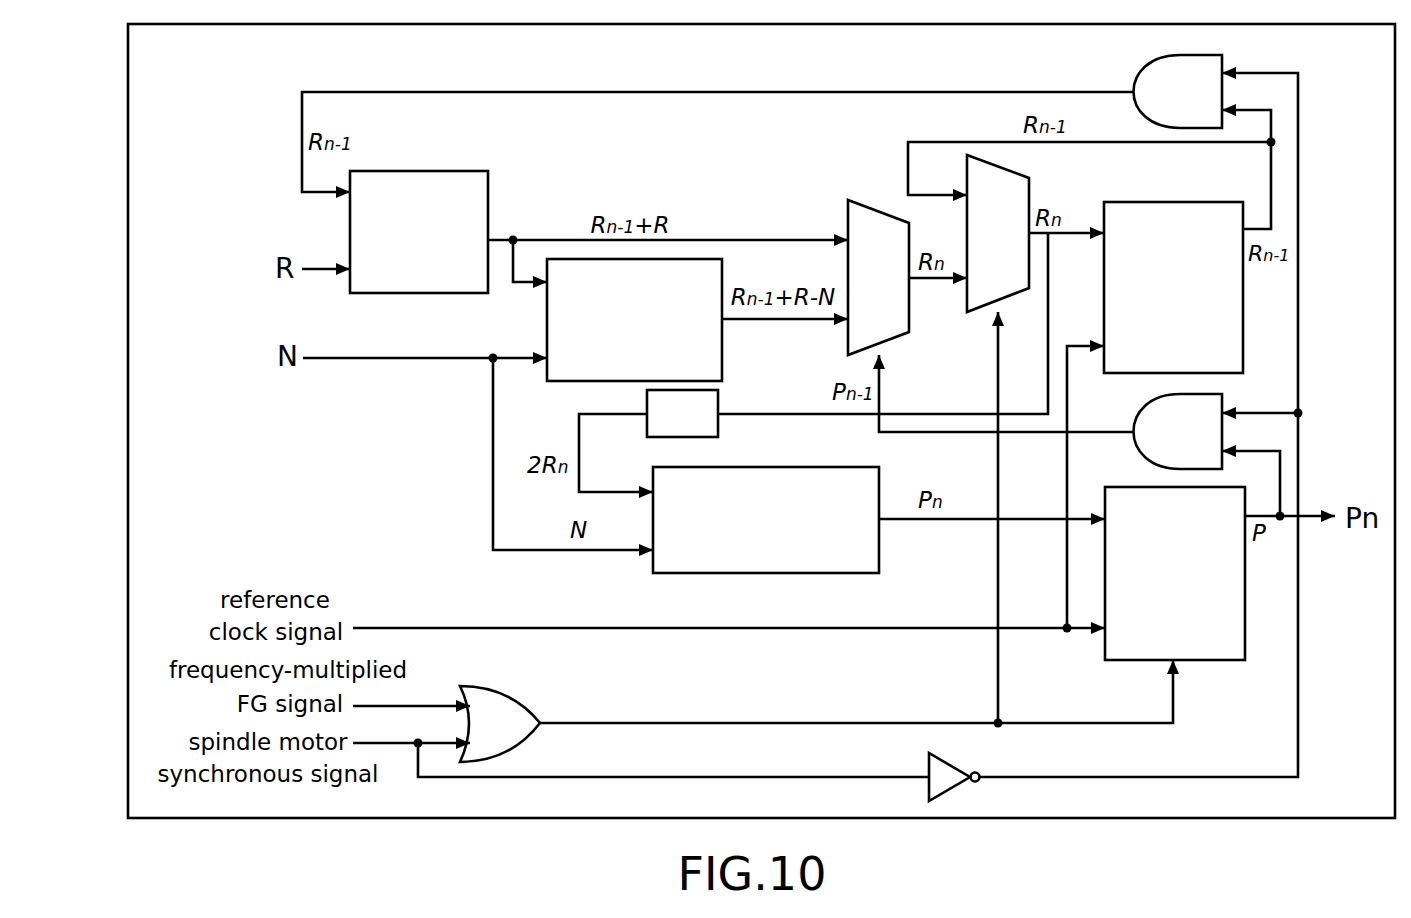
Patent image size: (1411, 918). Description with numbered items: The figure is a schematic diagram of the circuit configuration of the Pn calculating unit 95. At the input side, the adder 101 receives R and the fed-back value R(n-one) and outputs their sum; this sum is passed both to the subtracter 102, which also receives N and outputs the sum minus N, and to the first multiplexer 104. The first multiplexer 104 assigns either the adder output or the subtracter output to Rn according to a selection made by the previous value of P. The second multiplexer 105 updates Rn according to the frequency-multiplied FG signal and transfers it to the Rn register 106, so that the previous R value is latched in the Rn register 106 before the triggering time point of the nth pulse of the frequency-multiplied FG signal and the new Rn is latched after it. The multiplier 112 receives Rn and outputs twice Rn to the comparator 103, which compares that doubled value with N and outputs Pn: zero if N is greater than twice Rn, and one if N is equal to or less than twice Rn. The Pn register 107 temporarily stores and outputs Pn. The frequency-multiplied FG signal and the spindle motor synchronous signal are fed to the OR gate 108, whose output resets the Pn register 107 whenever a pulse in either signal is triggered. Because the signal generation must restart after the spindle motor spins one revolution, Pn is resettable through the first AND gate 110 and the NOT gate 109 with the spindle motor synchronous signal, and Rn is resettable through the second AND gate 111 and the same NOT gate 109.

The Pn calculating unit 95 is at (141, 184).
The adder 101 is at (434, 178).
The subtracter 102 is at (710, 330).
The comparator 103 is at (772, 477).
The first multiplexer 104 is at (897, 307).
The second multiplexer 105 is at (1003, 192).
The Rn register 106 is at (1168, 213).
The Pn register 107 is at (1227, 635).
The OR gate 108 is at (505, 717).
The NOT gate 109 is at (945, 780).
The first AND gate 110 is at (1152, 423).
The second AND gate 111 is at (1152, 85).
The multiplier 112 is at (648, 423).